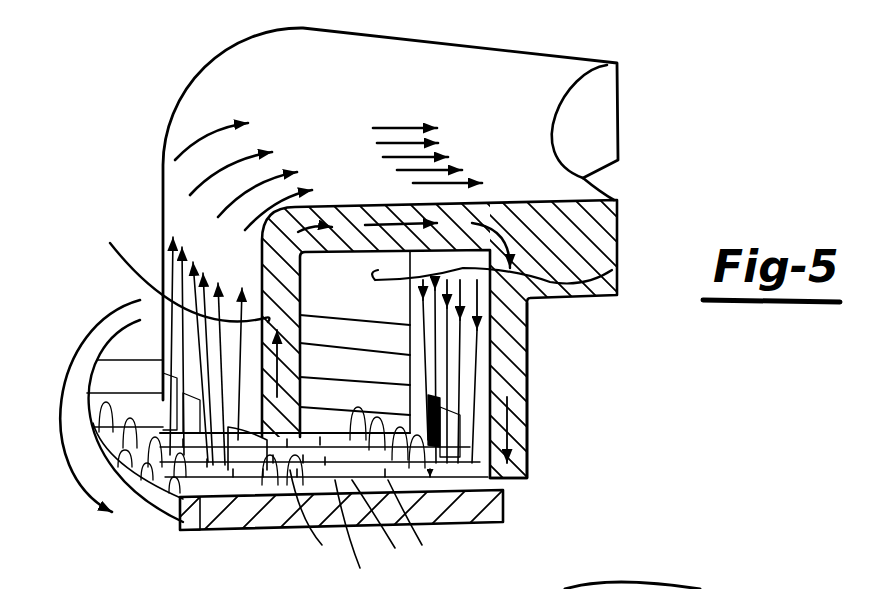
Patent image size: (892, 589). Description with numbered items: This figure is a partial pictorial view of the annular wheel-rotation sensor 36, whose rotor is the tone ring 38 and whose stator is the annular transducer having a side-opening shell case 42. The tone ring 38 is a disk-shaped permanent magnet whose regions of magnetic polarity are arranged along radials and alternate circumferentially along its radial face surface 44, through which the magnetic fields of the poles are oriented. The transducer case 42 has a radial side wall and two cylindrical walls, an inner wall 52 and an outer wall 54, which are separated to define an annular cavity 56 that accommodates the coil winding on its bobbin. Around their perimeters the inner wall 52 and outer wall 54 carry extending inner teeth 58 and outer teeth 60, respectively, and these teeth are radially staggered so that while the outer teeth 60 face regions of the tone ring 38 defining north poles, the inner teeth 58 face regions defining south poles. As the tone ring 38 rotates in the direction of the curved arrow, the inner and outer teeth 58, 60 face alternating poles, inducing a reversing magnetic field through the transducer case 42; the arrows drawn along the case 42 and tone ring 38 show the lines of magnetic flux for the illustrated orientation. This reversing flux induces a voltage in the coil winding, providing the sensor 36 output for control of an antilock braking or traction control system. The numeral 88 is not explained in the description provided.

The sensor 36 is at (158, 150).
The transducer case 42 is at (600, 232).
The inner wall 52 is at (528, 349).
The outer wall 54 is at (173, 267).
The radial face surface 44 is at (140, 300).
The annular cavity 56 is at (612, 270).
The tone ring 38 is at (279, 532).
The outer teeth 60 is at (183, 530).
The inner teeth 58 is at (467, 522).
The housing 88 is at (733, 588).